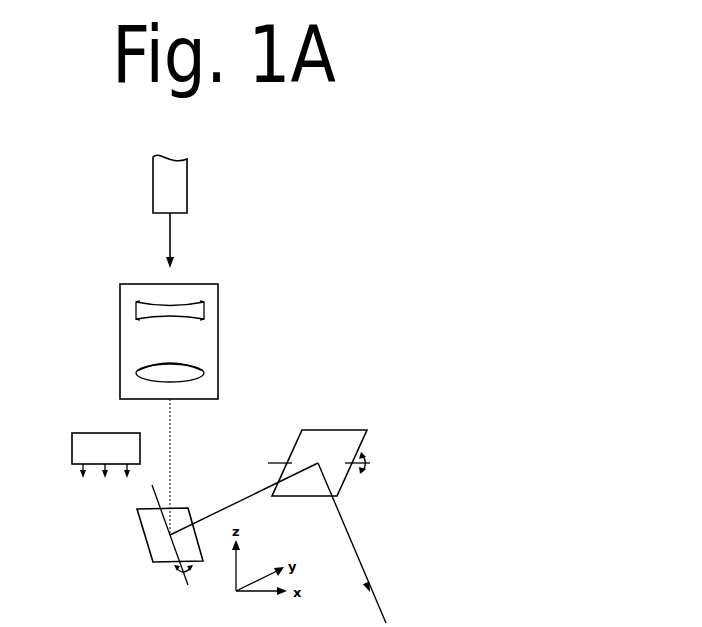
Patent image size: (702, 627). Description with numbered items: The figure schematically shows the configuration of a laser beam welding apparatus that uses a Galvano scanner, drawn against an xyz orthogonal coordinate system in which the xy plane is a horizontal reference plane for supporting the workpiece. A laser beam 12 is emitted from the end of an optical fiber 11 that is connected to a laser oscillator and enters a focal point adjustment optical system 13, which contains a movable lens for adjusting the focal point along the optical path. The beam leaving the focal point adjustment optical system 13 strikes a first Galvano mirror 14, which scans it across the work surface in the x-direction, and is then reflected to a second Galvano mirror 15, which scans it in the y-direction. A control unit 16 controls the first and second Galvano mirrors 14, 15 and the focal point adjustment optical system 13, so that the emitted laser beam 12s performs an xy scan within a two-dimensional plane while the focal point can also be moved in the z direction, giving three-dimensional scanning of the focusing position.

The optical fiber 11 is at (187, 184).
The laser beam 12 is at (170, 233).
The focal point adjustment optical system 13 is at (218, 300).
The first Galvano mirror 14 is at (184, 503).
The second Galvano mirror 15 is at (312, 424).
The control unit 16 is at (92, 433).
The emitted laser beam 12s is at (350, 543).